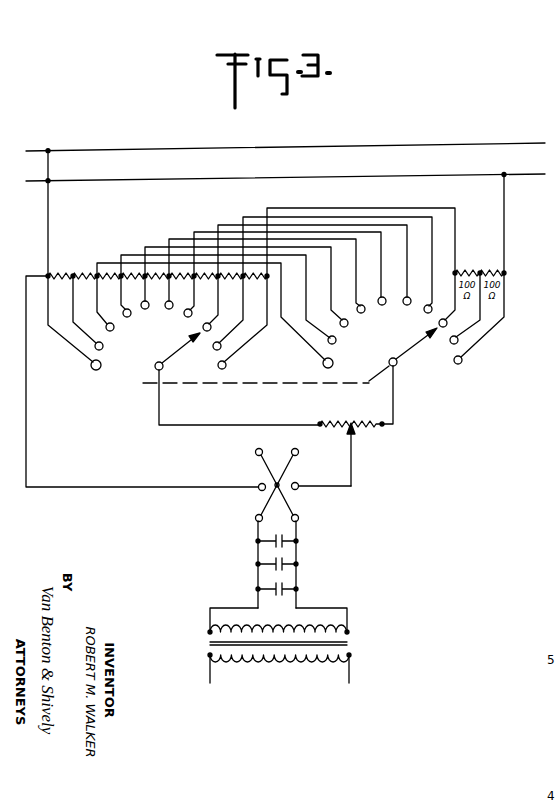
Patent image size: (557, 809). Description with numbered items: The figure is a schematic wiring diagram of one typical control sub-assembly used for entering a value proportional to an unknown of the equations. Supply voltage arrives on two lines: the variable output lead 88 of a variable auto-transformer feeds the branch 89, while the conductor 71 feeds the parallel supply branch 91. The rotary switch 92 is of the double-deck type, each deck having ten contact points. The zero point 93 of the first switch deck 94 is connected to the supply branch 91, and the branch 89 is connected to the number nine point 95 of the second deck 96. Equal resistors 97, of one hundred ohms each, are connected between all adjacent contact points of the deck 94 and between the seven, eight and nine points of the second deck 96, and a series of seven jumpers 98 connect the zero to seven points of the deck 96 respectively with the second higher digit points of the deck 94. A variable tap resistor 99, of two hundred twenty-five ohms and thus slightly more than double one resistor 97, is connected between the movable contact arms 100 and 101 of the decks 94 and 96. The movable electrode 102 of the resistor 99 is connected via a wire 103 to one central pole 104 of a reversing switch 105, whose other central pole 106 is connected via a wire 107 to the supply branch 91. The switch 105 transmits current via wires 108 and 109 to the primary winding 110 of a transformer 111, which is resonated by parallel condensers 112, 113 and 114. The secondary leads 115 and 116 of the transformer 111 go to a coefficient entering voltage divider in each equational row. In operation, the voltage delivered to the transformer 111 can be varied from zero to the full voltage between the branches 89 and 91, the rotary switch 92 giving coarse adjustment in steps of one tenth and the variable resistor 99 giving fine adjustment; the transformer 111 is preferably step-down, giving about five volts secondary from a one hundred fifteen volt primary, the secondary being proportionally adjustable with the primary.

The variable output lead 88 is at (107, 150).
The conductor 71 is at (123, 181).
The supply branch 91 is at (48, 225).
The branch 89 is at (505, 210).
The resistor 97 is at (62, 272).
The jumper 98 is at (114, 263).
The wire 107 is at (28, 436).
The zero point 93 is at (90, 373).
The switch deck 94 is at (126, 351).
The movable contact arm 100 is at (191, 346).
The rotary switch 92 is at (145, 383).
The second deck 96 is at (437, 347).
The number 9 point 95 is at (463, 360).
The movable contact arm 101 is at (415, 342).
The variable tap resistor 99 is at (358, 433).
The movable electrode 102 is at (347, 434).
The wire 103 is at (351, 486).
The central pole 104 is at (299, 486).
The reversing switch 105 is at (289, 473).
The reversing switch input terminal 106 is at (258, 491).
The wire 108 is at (255, 525).
The wire 109 is at (298, 529).
The condenser 112 is at (283, 545).
The condenser 113 is at (283, 563).
The condenser 114 is at (283, 585).
The primary winding 110 is at (260, 627).
The transformer 111 is at (347, 645).
The secondary lead 115 is at (208, 672).
The secondary lead 116 is at (350, 677).